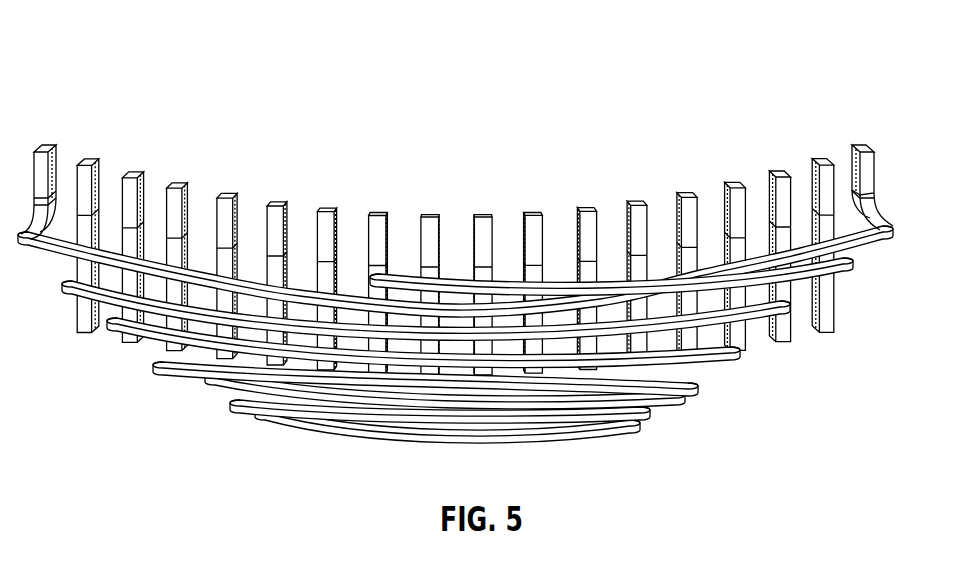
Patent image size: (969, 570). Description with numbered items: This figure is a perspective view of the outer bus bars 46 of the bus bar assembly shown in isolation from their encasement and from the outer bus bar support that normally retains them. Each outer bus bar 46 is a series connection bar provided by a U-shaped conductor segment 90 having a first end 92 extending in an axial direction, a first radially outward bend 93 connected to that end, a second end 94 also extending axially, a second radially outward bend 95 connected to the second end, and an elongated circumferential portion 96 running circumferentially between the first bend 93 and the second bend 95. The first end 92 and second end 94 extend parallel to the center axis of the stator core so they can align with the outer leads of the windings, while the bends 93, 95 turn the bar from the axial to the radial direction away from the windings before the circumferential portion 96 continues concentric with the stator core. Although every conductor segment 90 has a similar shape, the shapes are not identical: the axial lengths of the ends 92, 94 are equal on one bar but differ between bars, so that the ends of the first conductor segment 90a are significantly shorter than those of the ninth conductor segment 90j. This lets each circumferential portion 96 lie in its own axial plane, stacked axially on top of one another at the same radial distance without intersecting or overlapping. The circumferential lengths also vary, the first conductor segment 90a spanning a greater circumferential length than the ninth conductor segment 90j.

The outer bus bar 46 is at (866, 98).
The U-shaped conductor segment 90 is at (45, 260).
The first conductor segment 90a is at (872, 237).
The ninth conductor segment 90j is at (603, 428).
The first end 92 is at (372, 275).
The first radially outward bend 93 is at (370, 262).
The second end 94 is at (862, 143).
The second radially outward bend 95 is at (870, 198).
The elongated circumferential portion 96 is at (663, 272).